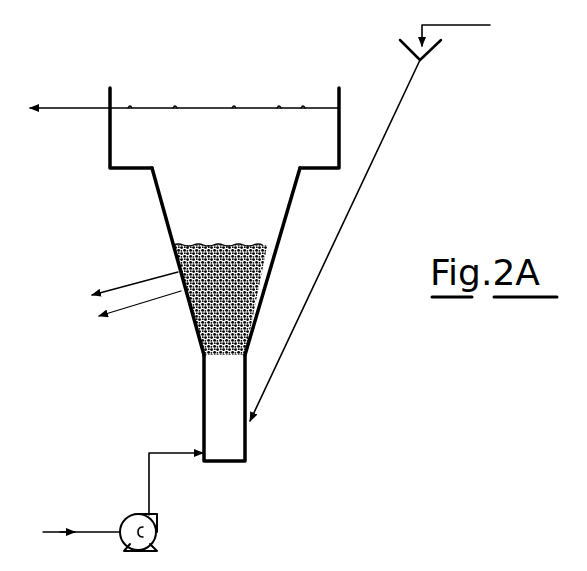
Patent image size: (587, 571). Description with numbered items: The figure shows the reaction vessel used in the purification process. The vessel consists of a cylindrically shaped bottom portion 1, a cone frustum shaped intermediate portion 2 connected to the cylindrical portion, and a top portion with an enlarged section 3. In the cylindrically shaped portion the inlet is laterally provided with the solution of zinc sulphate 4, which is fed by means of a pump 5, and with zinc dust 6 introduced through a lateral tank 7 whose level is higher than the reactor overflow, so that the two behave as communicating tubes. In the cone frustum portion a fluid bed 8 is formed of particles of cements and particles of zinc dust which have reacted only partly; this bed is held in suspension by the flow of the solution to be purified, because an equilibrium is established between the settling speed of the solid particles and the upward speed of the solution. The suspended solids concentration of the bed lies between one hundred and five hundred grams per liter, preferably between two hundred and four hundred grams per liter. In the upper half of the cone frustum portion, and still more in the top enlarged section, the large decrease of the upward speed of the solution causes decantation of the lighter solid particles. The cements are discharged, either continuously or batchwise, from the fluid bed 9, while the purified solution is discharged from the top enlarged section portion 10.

The bottom portion cylindrically shaped 1 is at (214, 420).
The cone frustum shaped intermediate portion 2 is at (282, 243).
The top portion with enlarged section 3 is at (341, 130).
The solution of zinc sulphate 4 is at (92, 532).
The pump 5 is at (153, 537).
The zinc dust 6 is at (267, 394).
The lateral tank 7 is at (432, 50).
The fluid bed 8 is at (184, 313).
The cements discharge from the fluid bed 9 is at (105, 313).
The purified solution discharge 10 is at (63, 108).